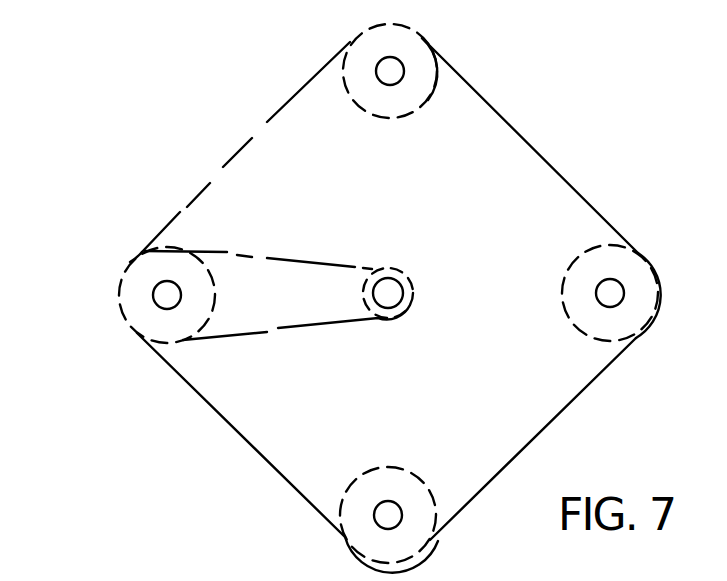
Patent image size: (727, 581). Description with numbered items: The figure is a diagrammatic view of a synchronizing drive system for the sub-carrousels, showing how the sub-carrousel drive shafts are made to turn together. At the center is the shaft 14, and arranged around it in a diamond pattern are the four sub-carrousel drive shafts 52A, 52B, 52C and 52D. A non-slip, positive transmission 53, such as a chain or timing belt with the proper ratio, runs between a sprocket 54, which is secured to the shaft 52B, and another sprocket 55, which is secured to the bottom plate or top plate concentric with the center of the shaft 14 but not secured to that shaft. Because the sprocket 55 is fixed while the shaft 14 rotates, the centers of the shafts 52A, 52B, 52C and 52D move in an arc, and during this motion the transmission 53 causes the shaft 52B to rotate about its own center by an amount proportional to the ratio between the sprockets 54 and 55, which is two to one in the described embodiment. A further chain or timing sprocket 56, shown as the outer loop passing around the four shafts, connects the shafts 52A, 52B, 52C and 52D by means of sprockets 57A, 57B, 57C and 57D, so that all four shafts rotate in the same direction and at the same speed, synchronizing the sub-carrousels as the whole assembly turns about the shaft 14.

The shaft 14 is at (389, 291).
The sub-carrousel drive shaft 52A is at (388, 508).
The sub-carrousel drive shaft 52B is at (166, 298).
The sub-carrousel drive shaft 52C is at (387, 70).
The sub-carrousel drive shaft 52D is at (611, 292).
The non-slip positive transmission 53 is at (288, 258).
The sprocket 54 is at (182, 252).
The sprocket 55 is at (405, 308).
The chain or timing sprocket 56 is at (250, 137).
The sprocket 57A is at (428, 530).
The sprocket 57B is at (142, 252).
The sprocket 57C is at (416, 92).
The sprocket 57D is at (620, 322).